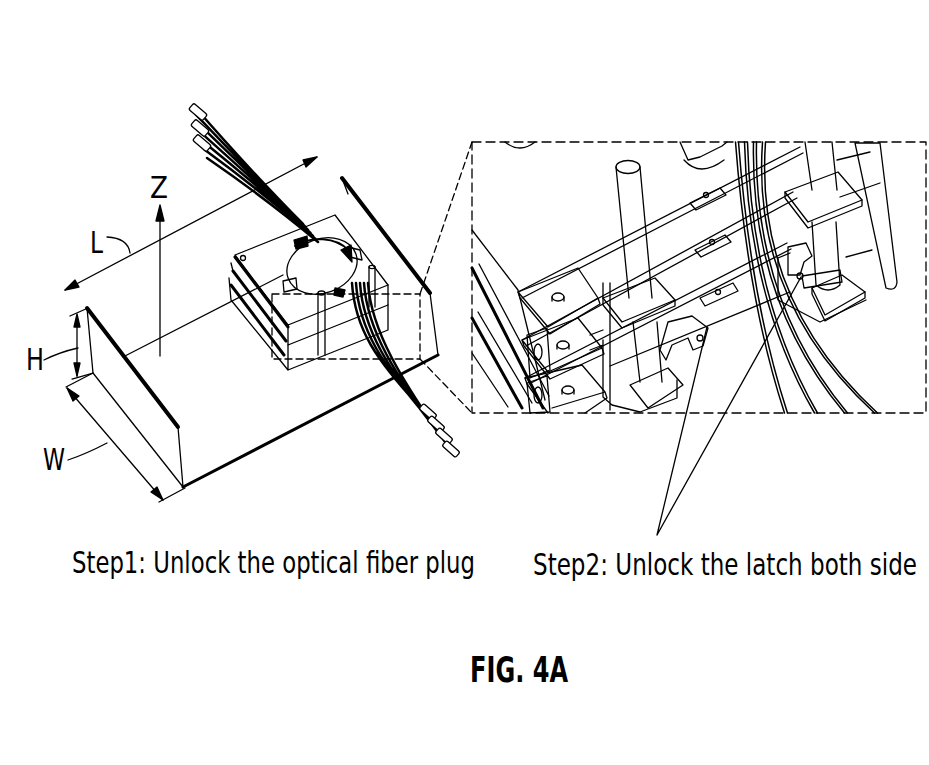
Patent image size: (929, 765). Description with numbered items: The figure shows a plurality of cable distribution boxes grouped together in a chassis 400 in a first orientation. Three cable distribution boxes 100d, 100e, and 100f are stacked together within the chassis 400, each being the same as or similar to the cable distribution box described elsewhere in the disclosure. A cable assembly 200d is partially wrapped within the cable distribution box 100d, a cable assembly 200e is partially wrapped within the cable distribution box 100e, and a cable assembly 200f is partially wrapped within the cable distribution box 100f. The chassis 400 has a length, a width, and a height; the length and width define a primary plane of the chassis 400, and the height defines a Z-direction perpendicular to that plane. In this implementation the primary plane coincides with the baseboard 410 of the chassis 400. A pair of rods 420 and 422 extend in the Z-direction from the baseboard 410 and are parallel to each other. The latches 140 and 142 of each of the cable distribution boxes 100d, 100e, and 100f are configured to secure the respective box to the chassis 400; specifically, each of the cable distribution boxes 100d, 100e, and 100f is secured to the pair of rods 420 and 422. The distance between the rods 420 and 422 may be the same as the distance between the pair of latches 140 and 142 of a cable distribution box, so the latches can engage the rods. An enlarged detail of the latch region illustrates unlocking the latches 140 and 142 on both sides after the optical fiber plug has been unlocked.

The cable distribution box 100d is at (280, 243).
The cable distribution box 100e is at (257, 323).
The cable distribution box 100f is at (267, 337).
The cable assembly 200d is at (295, 207).
The cable assembly 200e is at (246, 176).
The cable assembly 200f is at (367, 370).
The chassis 400 is at (363, 197).
The baseboard 410 is at (265, 435).
The rod 420 is at (633, 160).
The rod 422 is at (823, 167).
The latch 140 is at (652, 377).
The latch 142 is at (842, 413).